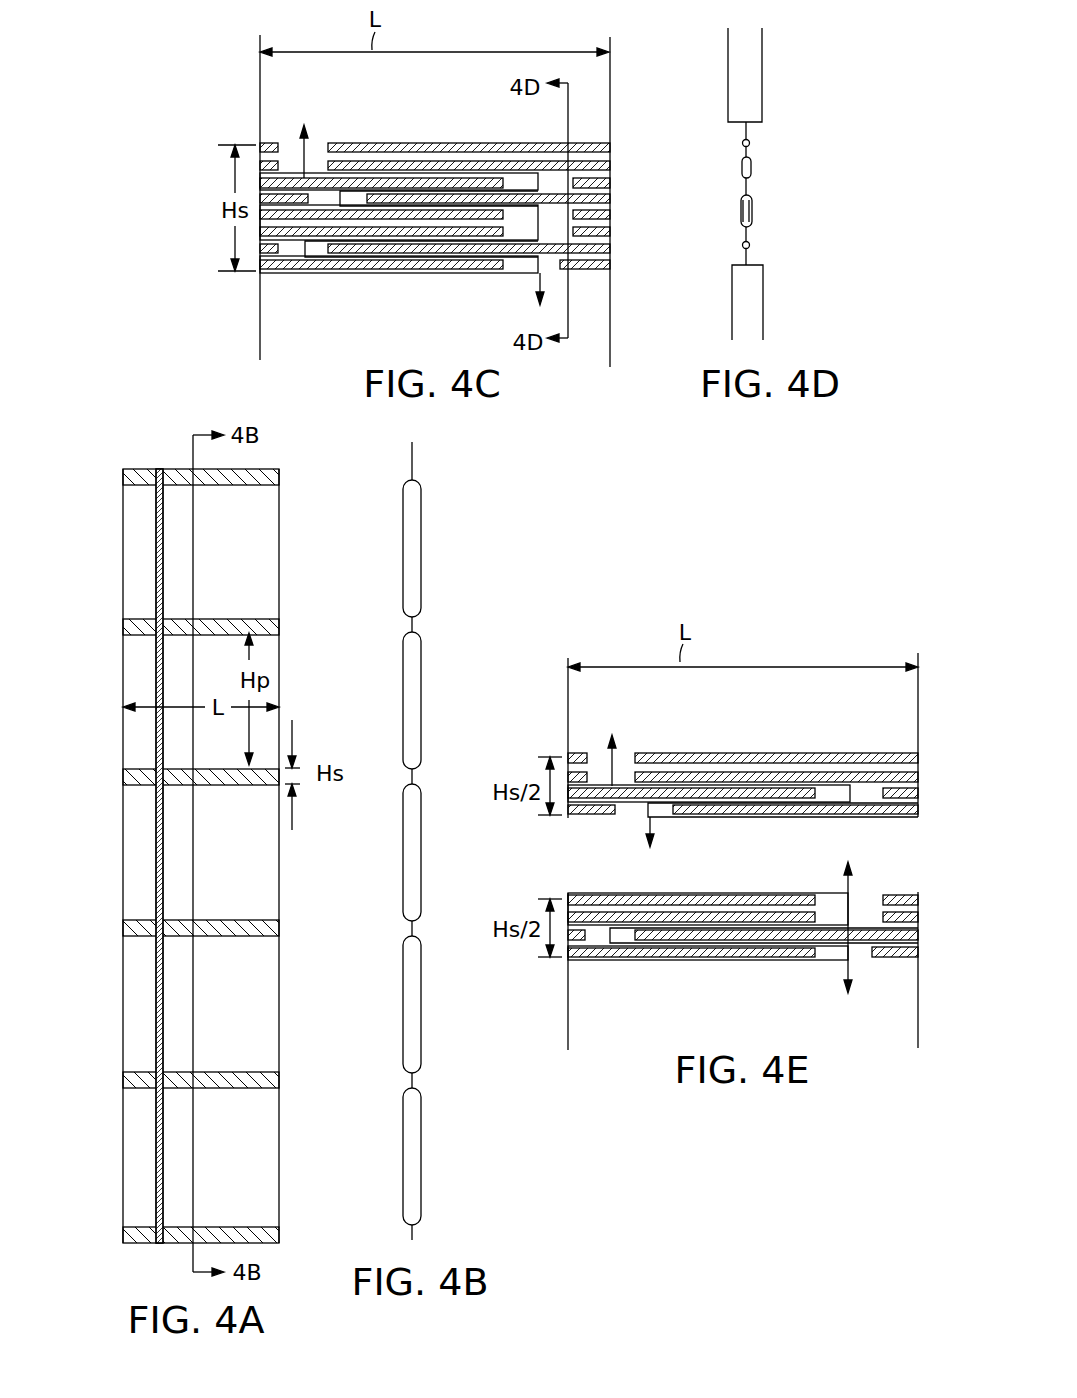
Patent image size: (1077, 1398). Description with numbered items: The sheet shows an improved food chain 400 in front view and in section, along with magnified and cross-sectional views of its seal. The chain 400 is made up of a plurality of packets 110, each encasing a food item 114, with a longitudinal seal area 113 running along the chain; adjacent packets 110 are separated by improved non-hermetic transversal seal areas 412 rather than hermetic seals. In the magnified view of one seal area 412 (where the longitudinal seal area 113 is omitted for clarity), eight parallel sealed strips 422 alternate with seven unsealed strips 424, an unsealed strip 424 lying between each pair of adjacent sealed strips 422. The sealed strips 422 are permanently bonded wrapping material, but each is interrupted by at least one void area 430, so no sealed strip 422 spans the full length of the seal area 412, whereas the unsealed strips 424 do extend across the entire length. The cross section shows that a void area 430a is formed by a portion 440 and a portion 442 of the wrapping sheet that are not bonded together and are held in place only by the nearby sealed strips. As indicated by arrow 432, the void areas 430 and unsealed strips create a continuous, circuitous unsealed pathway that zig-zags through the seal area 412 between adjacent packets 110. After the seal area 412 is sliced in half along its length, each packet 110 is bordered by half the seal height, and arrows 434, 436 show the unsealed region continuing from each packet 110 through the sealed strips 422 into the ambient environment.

In FIG. 4C, the packet 110 is at (258, 78).
In FIG. 4D, the packet 110 is at (763, 78).
In FIG. 4A, the packet 110 is at (123, 538).
In FIG. 4B, the packet 110 is at (423, 556).
In FIG. 4E, the packet 110 is at (568, 700).
In FIG. 4A, the longitudinal seal area 113 is at (156, 747).
In FIG. 4B, the food item 114 is at (413, 603).
In FIG. 4A, the improved food chain 400 is at (136, 1262).
In FIG. 4B, the improved food chain 400 is at (452, 1183).
In FIG. 4C, the non-hermetic transversal seal area 412 is at (390, 128).
In FIG. 4A, the non-hermetic transversal seal area 412 is at (123, 478).
In FIG. 4B, the non-hermetic transversal seal area 412 is at (414, 476).
In FIG. 4E, the non-hermetic transversal seal area 412 is at (694, 738).
In FIG. 4C, the sealed strip 422 is at (428, 143).
In FIG. 4D, the sealed strip 422 is at (745, 188).
In FIG. 4E, the sealed strip 422 is at (738, 754).
In FIG. 4C, the unsealed strip 424 is at (527, 150).
In FIG. 4D, the unsealed strip 424 is at (752, 145).
In FIG. 4E, the unsealed strip 424 is at (838, 764).
In FIG. 4C, the void area 430 is at (328, 197).
In FIG. 4D, the void area 430 is at (742, 165).
In FIG. 4E, the void area 430 is at (628, 810).
In FIG. 4D, the void area 430a is at (752, 205).
In FIG. 4C, the arrow 432 is at (537, 272).
In FIG. 4E, the arrow 434 is at (652, 817).
In FIG. 4E, the arrow 436 is at (846, 882).
In FIG. 4D, the portion of sheet 440 is at (741, 210).
In FIG. 4D, the portion of sheet 442 is at (753, 213).